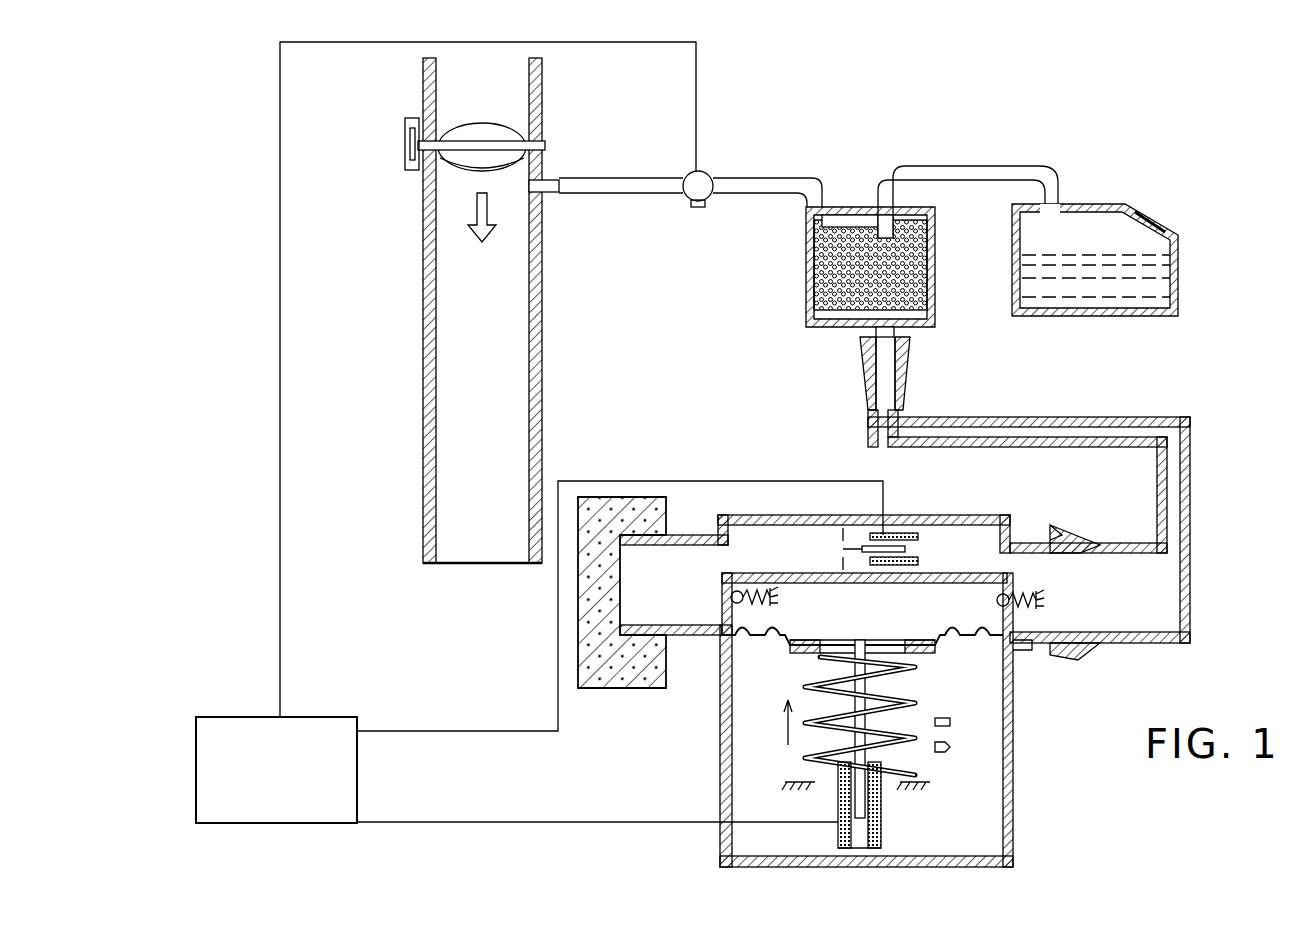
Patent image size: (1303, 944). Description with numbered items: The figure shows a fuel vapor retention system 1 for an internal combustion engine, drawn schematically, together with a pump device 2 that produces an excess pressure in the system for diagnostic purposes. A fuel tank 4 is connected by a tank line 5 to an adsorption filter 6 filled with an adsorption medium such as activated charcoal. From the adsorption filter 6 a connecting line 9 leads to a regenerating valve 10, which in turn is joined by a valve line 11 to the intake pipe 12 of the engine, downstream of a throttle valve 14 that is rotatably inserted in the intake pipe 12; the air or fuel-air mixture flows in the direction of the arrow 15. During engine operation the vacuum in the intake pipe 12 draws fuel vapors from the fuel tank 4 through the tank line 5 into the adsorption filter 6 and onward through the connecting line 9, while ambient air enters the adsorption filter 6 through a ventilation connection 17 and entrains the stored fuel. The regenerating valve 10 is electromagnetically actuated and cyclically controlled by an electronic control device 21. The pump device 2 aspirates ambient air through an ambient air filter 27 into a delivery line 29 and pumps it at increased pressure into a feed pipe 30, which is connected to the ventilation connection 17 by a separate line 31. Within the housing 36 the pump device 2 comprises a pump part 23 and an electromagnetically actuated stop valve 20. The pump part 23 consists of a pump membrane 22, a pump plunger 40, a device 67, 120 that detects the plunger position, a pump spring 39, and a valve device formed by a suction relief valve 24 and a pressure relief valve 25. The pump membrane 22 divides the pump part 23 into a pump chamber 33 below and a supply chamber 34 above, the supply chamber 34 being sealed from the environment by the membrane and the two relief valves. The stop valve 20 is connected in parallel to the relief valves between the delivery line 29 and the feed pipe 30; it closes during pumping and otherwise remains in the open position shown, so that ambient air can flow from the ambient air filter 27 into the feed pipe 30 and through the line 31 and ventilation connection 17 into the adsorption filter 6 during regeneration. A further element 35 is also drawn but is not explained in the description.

The fuel vapor retention system 1 is at (1182, 152).
The pump device 2 is at (1013, 790).
The fuel tank 4 is at (1150, 245).
The tank line 5 is at (963, 175).
The adsorption filter 6 is at (806, 260).
The connecting line 9 is at (760, 185).
The regenerating valve 10 is at (690, 215).
The valve line 11 is at (610, 178).
The intake pipe 12 is at (423, 410).
The throttle valve 14 is at (488, 125).
The arrow 15 is at (482, 240).
The ventilation connection 17 is at (895, 340).
The stop valve 20 is at (925, 556).
The electronic control device 21 is at (282, 781).
The pump membrane 22 is at (760, 640).
The pump part 23 is at (898, 800).
The suction relief valve 24 is at (775, 597).
The pressure relief valve 25 is at (1010, 620).
The ambient air filter 27 is at (626, 682).
The delivery line 29 is at (675, 595).
The feed pipe 30 is at (1068, 645).
The line 31 is at (868, 400).
The pump chamber 33 is at (766, 784).
The supply chamber 34 is at (888, 624).
The nozzle 35 is at (1030, 540).
The housing 36 is at (720, 805).
The pump spring 39 is at (908, 665).
The pump plunger 40 is at (815, 668).
The position detecting device 67 is at (920, 712).
The position detecting device 120 is at (955, 752).